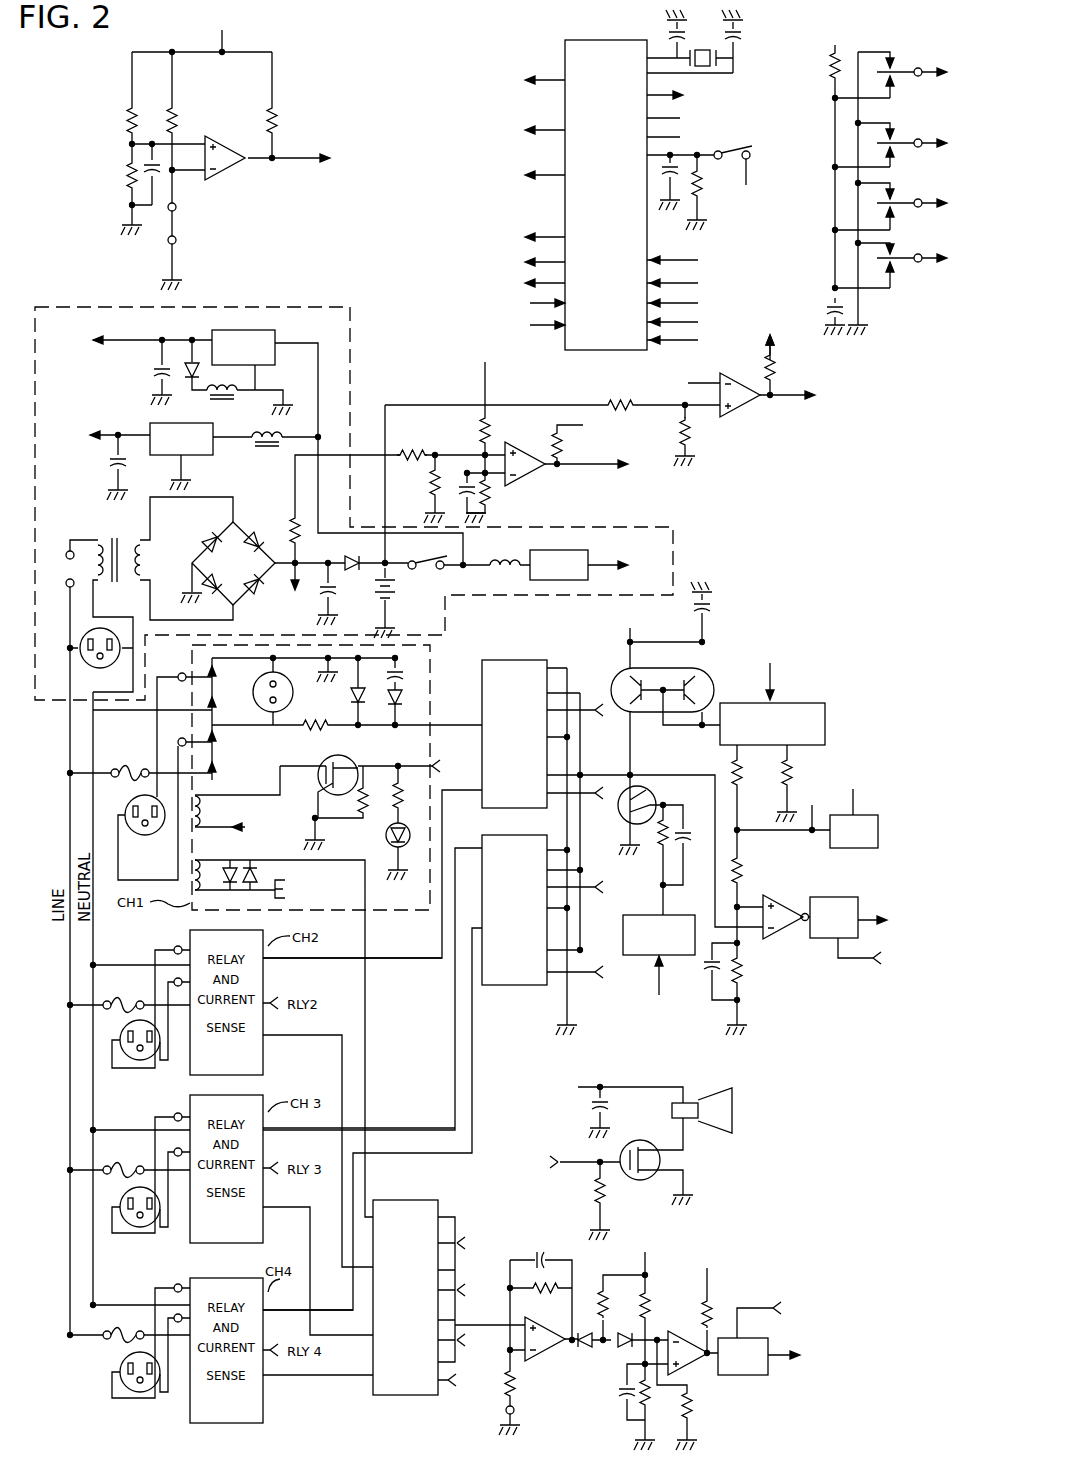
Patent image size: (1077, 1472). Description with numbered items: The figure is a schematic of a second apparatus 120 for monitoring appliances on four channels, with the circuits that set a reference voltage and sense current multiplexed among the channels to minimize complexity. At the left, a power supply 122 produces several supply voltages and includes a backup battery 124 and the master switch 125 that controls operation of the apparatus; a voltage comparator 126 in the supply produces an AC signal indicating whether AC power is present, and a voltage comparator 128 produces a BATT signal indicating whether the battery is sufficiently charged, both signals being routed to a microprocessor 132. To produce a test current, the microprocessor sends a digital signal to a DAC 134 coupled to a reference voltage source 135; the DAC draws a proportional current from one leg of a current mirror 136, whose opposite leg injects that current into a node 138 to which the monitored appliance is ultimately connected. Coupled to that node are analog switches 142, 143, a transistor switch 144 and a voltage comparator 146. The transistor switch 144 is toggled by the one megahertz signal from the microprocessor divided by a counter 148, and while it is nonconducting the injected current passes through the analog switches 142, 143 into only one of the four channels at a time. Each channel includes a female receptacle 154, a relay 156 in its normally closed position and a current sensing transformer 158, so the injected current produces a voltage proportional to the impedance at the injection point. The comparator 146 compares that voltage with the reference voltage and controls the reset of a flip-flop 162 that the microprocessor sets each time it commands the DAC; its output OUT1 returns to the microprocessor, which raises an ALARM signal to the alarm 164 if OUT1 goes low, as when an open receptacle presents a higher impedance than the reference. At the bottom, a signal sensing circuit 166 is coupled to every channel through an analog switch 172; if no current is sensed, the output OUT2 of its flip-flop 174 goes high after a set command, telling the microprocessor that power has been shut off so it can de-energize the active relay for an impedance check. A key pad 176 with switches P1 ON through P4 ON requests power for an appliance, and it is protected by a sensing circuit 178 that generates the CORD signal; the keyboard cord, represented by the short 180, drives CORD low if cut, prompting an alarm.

The apparatus 120 is at (413, 68).
The power supply 122 is at (352, 333).
The battery 124 is at (392, 594).
The master switch 125 is at (425, 558).
The voltage comparator 126 is at (540, 478).
The voltage comparator 128 is at (745, 412).
The microprocessor 132 is at (565, 50).
The DAC 134 is at (827, 707).
The reference voltage source 135 is at (832, 850).
The current mirror 136 is at (713, 668).
The node 138 is at (636, 777).
The analog switch 142 is at (482, 690).
The analog switch 143 is at (482, 843).
The transistor switch 144 is at (656, 787).
The voltage comparator 146 is at (780, 936).
The counter 148 is at (623, 942).
The female receptacle 154 is at (127, 805).
The relay 156 is at (214, 708).
The current sensing transformer 158 is at (218, 866).
The flip-flop 162 is at (847, 898).
The alarm 164 is at (717, 1093).
The signal sensing circuit 166 is at (578, 1393).
The analog switch 172 is at (405, 1200).
The flip-flop 174 is at (742, 1378).
The key pad 176 is at (906, 313).
The sensing circuit 178 is at (300, 116).
The short 180 is at (176, 230).